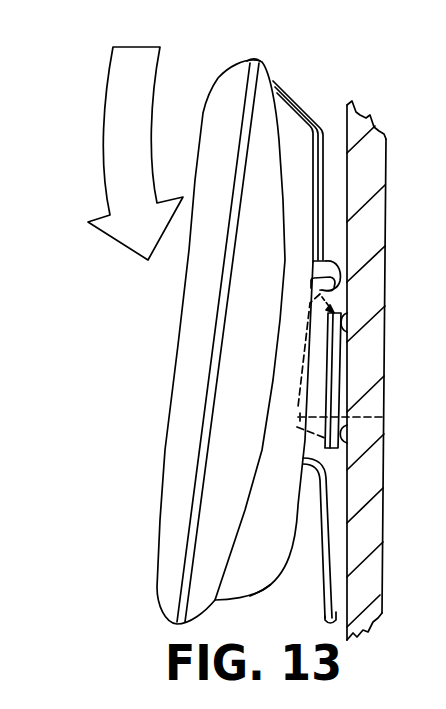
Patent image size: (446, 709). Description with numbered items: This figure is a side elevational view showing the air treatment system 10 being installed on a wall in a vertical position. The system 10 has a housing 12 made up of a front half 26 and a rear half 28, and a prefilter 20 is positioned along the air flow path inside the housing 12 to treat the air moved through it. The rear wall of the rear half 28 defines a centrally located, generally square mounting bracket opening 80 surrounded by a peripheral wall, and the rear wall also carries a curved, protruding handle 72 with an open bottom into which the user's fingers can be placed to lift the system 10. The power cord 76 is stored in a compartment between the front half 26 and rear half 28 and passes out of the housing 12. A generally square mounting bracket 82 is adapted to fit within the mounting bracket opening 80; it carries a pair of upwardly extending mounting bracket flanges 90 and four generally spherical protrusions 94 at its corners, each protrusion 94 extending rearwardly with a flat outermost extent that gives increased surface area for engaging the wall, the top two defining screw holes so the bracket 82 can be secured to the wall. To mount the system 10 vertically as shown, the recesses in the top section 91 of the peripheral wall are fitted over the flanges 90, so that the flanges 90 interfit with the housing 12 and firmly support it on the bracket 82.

The air treatment system 10 is at (84, 138).
The housing 12 is at (265, 60).
The prefilter 20 is at (311, 101).
The front half 26 is at (177, 340).
The rear half 28 is at (265, 592).
The handle 72 is at (341, 266).
The power cord 76 is at (320, 589).
The mounting bracket opening 80 is at (386, 420).
The mounting bracket 82 is at (340, 377).
The mounting bracket flanges 90 is at (349, 305).
The top section 91 is at (337, 282).
The spherical protrusions 94 is at (348, 303).